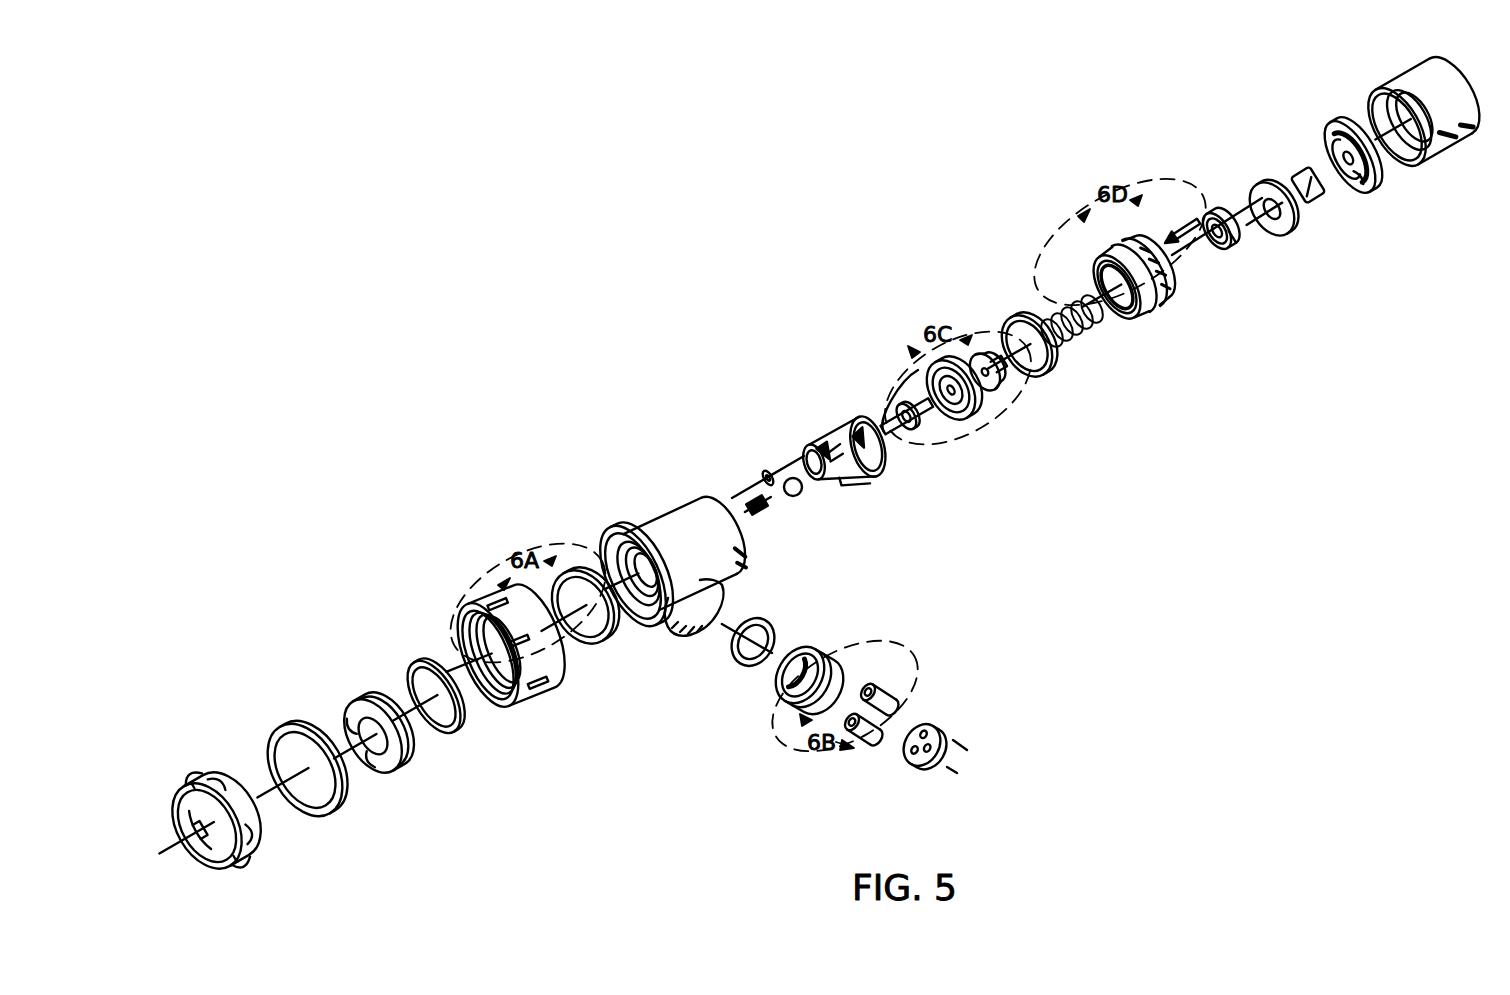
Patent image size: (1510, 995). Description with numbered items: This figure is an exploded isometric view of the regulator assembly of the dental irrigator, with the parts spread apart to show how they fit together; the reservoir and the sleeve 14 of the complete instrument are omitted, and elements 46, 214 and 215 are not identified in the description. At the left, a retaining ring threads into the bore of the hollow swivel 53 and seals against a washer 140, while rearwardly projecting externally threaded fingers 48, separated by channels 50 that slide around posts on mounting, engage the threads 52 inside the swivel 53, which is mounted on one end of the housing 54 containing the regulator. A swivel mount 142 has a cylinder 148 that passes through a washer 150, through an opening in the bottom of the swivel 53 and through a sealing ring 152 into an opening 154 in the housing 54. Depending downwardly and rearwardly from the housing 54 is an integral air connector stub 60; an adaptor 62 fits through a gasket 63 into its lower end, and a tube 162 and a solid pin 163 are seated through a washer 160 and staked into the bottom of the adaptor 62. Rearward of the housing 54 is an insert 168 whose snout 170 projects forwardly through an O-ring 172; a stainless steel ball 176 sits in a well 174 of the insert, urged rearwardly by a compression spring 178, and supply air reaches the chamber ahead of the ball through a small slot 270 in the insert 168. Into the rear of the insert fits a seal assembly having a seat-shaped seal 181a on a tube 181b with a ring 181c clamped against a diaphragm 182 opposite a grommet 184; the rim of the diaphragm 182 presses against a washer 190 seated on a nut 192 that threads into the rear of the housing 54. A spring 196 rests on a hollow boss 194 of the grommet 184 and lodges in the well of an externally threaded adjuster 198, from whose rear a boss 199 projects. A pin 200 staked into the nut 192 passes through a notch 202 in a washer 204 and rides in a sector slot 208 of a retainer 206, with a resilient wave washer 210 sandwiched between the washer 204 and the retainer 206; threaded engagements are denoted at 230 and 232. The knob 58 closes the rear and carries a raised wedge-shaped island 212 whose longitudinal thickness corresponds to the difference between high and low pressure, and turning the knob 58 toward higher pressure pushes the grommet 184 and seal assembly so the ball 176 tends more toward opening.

The sleeve 14 is at (163, 784).
The end cap 46 is at (228, 860).
The externally threaded fingers 48 is at (256, 828).
The channel 50 is at (238, 745).
The washer 140 is at (340, 792).
The swivel mount 142 is at (390, 762).
The cylinder 148 is at (390, 704).
The washer 150 is at (452, 720).
The threads 52 is at (455, 624).
The swivel 53 is at (538, 688).
The sealing ring 152 is at (588, 640).
The opening 154 is at (612, 560).
The housing 54 is at (702, 515).
The air connector stub 60 is at (706, 640).
The gasket 63 is at (758, 626).
The adaptor 62 is at (848, 663).
The tube 162 is at (888, 692).
The solid pin 163 is at (868, 746).
The washer 160 is at (942, 740).
The O-ring 172 is at (762, 474).
The ball 176 is at (792, 496).
The compression spring 178 is at (760, 514).
The insert 168 is at (862, 425).
The snout 170 is at (803, 455).
The well 174 is at (812, 478).
The slot 270 is at (855, 482).
The seat-shaped seal 181a is at (882, 425).
The tube 181b is at (890, 437).
The ring 181c is at (910, 405).
The diaphragm 182 is at (968, 425).
The grommet 184 is at (985, 355).
The hollow boss 194 is at (1005, 385).
The washer 190 is at (1048, 358).
The spring 196 is at (1045, 300).
The nut 192 is at (1152, 298).
The threaded engagement 230 is at (1135, 316).
The pin 200 is at (1168, 250).
The adjuster 198 is at (1210, 216).
The threaded engagement 232 is at (1230, 250).
The notch 202 is at (1244, 206).
The boss 199 is at (1265, 236).
The washer 204 is at (1292, 224).
The wave washer 210 is at (1305, 176).
The retainer 206 is at (1365, 180).
The sector slot 208 is at (1330, 136).
The cup hole 214 is at (1350, 178).
The cup slot 215 is at (1360, 144).
The knob 58 is at (1450, 98).
The wedge-shaped island 212 is at (1450, 140).